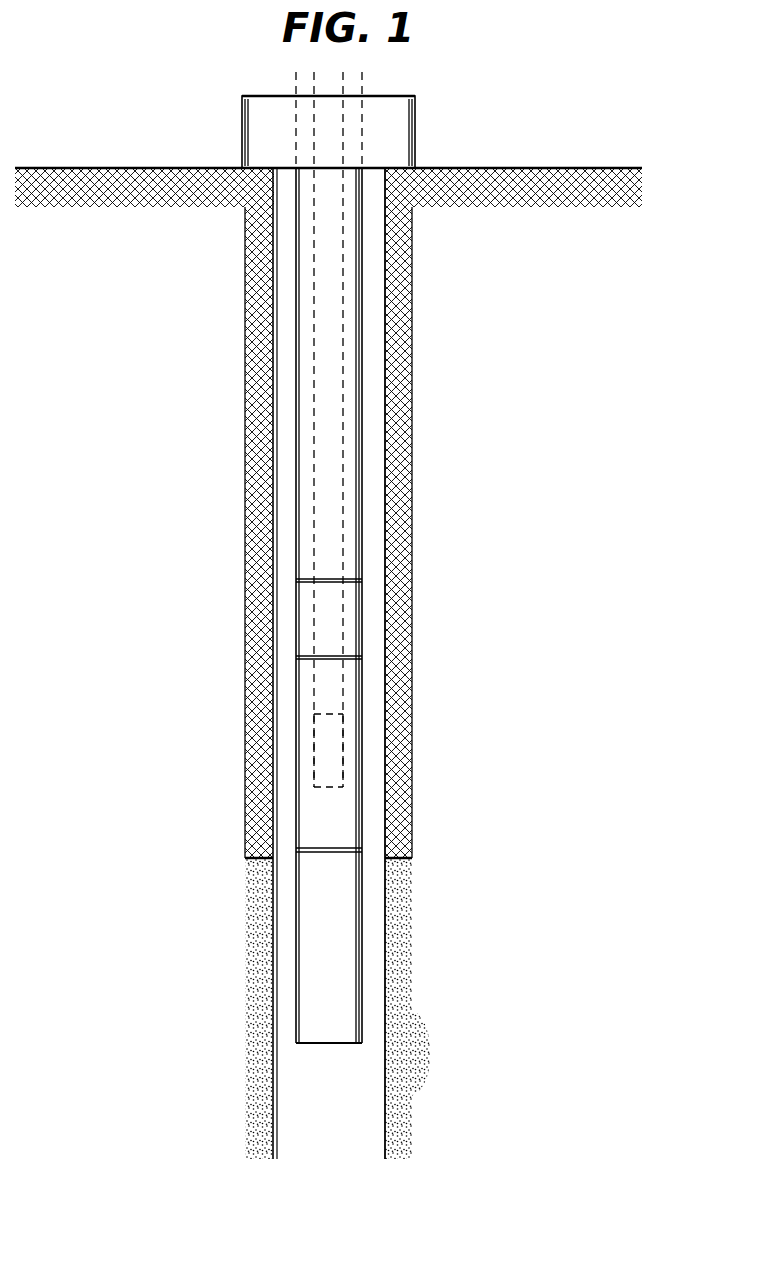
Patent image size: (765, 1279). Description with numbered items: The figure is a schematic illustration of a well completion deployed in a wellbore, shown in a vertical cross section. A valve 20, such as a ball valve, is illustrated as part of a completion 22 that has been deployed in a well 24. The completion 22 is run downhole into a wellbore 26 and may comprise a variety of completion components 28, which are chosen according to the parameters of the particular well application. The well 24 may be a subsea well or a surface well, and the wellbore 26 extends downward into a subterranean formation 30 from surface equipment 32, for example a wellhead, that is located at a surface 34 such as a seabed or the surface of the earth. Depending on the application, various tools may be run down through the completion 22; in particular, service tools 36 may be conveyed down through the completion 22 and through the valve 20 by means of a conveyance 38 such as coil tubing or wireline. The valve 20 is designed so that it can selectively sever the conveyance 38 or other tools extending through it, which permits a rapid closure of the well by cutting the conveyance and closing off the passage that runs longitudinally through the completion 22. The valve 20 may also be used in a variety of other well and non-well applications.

The valve 20 is at (372, 616).
The completion 22 is at (372, 463).
The well 24 is at (262, 431).
The wellbore 26 is at (287, 352).
The completion components 28 is at (342, 835).
The subterranean formation 30 is at (422, 1068).
The surface equipment 32 is at (416, 127).
The surface 34 is at (100, 168).
The service tools 36 is at (313, 741).
The conveyance 38 is at (343, 305).